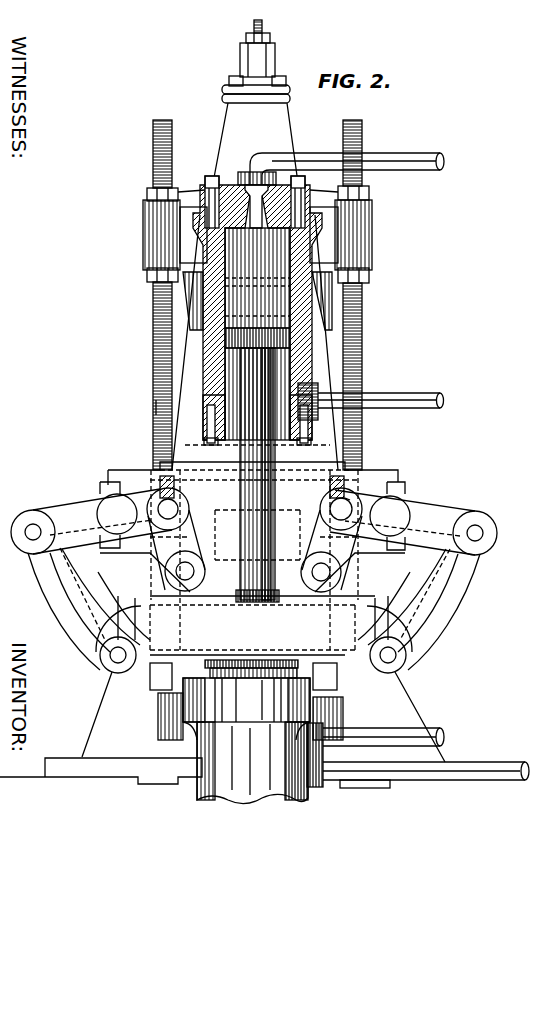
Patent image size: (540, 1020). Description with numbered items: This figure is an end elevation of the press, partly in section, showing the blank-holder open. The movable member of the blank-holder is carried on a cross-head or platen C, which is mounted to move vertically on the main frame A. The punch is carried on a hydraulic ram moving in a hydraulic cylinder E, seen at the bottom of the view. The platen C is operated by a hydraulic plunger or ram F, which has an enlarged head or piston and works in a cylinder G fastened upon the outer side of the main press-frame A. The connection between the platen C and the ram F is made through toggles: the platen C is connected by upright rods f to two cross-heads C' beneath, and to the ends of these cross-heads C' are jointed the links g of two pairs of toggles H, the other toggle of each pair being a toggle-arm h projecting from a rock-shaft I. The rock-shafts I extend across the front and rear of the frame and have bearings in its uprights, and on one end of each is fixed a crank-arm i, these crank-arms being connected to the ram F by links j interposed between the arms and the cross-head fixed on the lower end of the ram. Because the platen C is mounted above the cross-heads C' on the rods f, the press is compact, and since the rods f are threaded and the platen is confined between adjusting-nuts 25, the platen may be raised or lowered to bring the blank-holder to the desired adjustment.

The adjusting-nuts 25 is at (147, 194).
The cross-head or platen C is at (350, 295).
The cylinder G is at (212, 381).
The hydraulic plunger or ram F is at (262, 487).
The upright rods f is at (156, 407).
The main frame A is at (398, 702).
The cross-heads C' is at (252, 558).
The rock-shaft I is at (253, 516).
The links j is at (315, 515).
The toggle-arm h is at (80, 510).
The crank-arm i is at (340, 505).
The toggles H is at (250, 611).
The links g is at (255, 610).
The hydraulic cylinder E is at (246, 732).